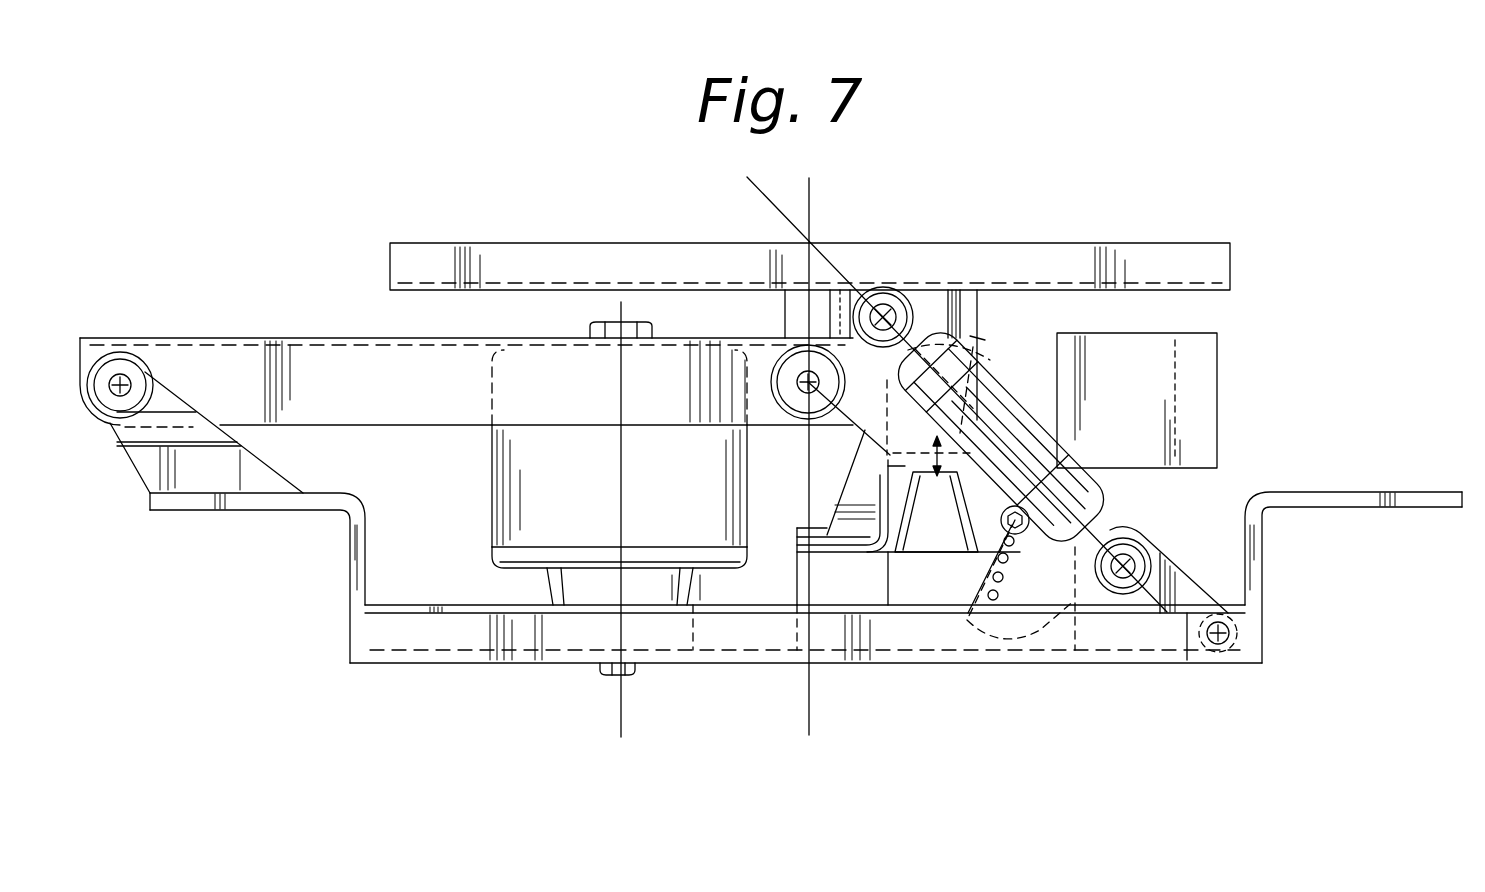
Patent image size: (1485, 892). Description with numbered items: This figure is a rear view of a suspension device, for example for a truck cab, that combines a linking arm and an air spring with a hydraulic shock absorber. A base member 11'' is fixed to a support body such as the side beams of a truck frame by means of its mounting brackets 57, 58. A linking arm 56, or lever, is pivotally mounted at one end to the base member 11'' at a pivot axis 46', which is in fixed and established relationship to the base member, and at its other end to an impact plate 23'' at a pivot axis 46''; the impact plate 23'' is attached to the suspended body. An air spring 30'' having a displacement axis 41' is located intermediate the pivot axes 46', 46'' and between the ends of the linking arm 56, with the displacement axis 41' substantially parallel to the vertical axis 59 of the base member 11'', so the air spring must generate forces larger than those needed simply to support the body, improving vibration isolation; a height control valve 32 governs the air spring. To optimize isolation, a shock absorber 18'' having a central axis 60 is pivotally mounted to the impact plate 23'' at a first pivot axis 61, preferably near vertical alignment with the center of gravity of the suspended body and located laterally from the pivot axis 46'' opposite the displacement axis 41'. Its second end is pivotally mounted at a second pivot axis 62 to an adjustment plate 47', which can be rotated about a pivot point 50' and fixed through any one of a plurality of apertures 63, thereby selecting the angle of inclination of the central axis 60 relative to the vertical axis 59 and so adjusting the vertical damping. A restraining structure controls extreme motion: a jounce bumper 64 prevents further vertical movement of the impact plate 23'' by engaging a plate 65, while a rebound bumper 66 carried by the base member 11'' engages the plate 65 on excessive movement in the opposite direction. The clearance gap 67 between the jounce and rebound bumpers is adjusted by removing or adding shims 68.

The base member 11'' is at (806, 656).
The shock absorber 18'' is at (1000, 487).
The impact plate 23'' is at (823, 247).
The air spring 30'' is at (576, 477).
The height control valve 32 is at (1200, 375).
The displacement axis 41' is at (595, 518).
The pivot axis 46' is at (149, 359).
The pivot axis 46'' is at (822, 410).
The adjustment plate 47' is at (1169, 584).
The pivot point 50' is at (1183, 662).
The linking arm 56 is at (355, 360).
The mounting bracket 57 is at (248, 500).
The mounting bracket 58 is at (1380, 508).
The vertical axis 59 is at (808, 690).
The central axis 60 is at (825, 262).
The first pivot axis 61 is at (886, 305).
The second pivot axis 62 is at (1123, 545).
The apertures 63 is at (985, 580).
The jounce bumper 64 is at (905, 540).
The plate 65 is at (900, 455).
The rebound bumper 66 is at (990, 332).
The clearance gap 67 is at (925, 460).
The shims 68 is at (835, 548).